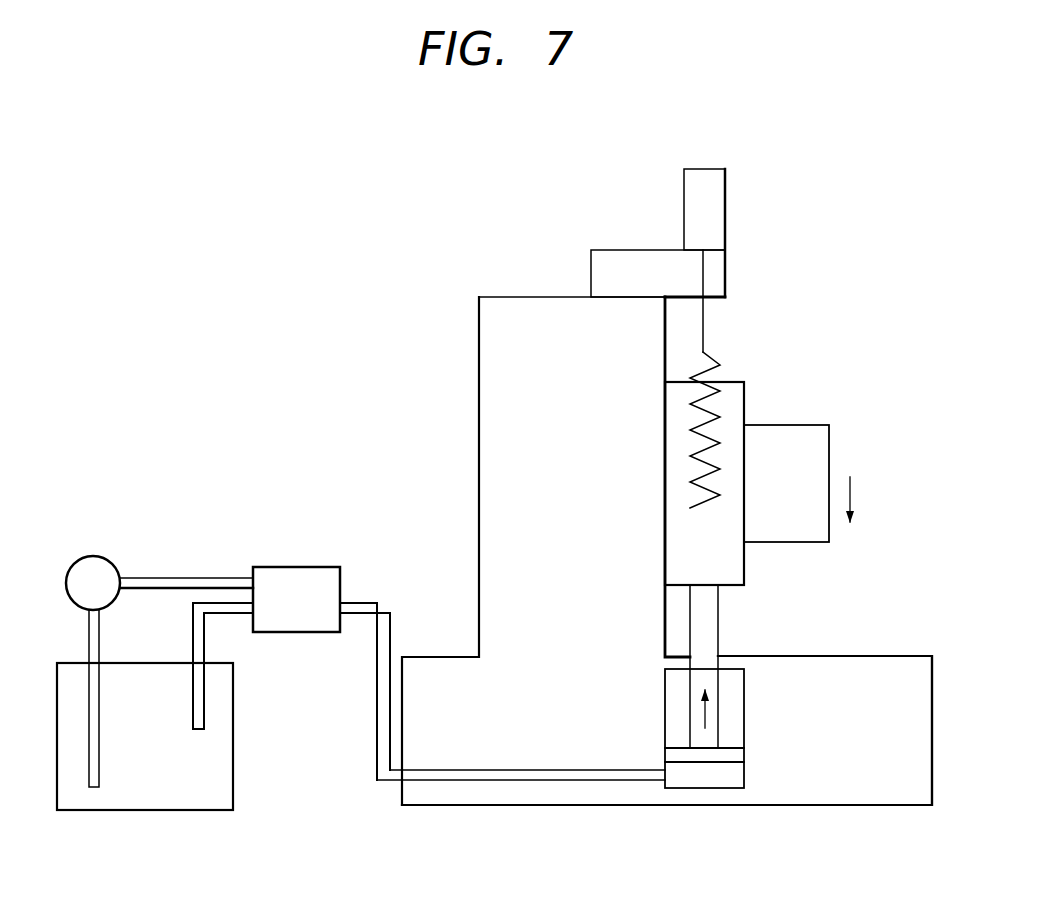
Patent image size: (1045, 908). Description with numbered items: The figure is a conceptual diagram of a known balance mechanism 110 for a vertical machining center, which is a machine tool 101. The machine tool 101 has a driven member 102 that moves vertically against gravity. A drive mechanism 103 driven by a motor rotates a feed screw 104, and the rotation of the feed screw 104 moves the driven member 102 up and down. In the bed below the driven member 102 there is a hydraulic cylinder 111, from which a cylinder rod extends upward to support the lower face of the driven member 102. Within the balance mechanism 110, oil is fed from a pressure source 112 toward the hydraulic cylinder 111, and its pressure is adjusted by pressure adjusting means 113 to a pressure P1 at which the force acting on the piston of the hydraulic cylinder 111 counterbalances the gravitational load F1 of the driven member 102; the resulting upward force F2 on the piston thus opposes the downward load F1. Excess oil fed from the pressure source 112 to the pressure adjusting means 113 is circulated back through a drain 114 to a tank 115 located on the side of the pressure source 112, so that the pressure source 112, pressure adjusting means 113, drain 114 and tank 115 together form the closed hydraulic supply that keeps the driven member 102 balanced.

The machine tool 101 is at (799, 278).
The driven member 102 is at (781, 437).
The drive mechanism 103 is at (705, 178).
The feed screw 104 is at (716, 478).
The balance mechanism 110 is at (297, 792).
The hydraulic cylinder 111 is at (762, 708).
The pressure source 112 is at (101, 544).
The pressure adjusting means 113 is at (317, 577).
The drain 114 is at (199, 710).
The tank 115 is at (178, 797).
The pressure P1 is at (690, 778).
The gravitational load F1 is at (853, 522).
The force F2 is at (707, 730).